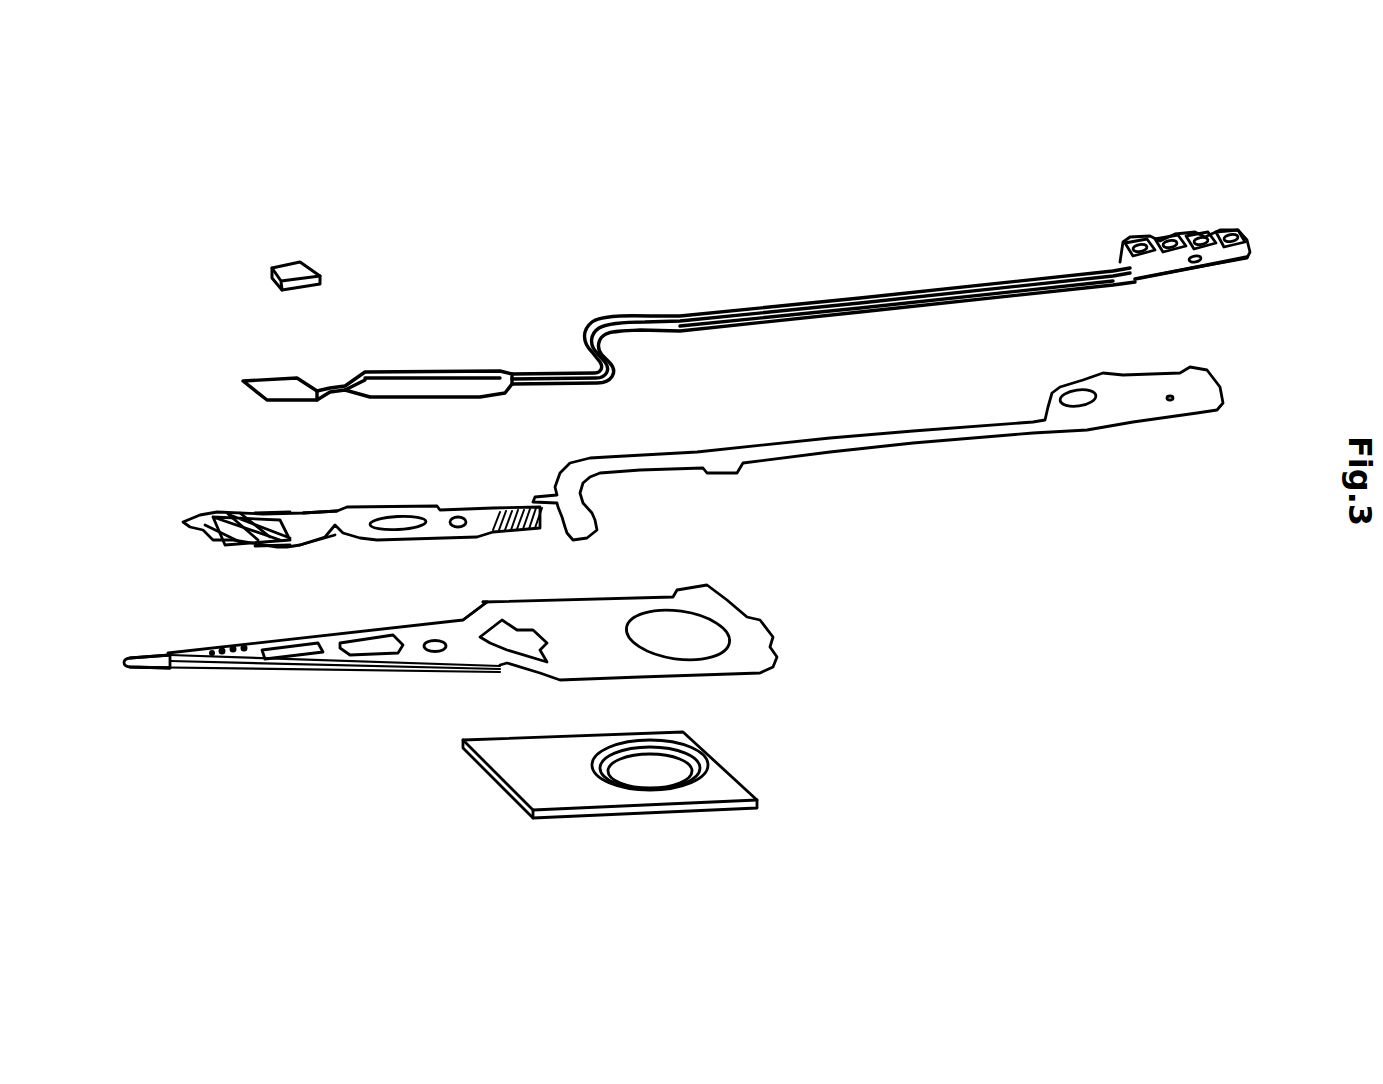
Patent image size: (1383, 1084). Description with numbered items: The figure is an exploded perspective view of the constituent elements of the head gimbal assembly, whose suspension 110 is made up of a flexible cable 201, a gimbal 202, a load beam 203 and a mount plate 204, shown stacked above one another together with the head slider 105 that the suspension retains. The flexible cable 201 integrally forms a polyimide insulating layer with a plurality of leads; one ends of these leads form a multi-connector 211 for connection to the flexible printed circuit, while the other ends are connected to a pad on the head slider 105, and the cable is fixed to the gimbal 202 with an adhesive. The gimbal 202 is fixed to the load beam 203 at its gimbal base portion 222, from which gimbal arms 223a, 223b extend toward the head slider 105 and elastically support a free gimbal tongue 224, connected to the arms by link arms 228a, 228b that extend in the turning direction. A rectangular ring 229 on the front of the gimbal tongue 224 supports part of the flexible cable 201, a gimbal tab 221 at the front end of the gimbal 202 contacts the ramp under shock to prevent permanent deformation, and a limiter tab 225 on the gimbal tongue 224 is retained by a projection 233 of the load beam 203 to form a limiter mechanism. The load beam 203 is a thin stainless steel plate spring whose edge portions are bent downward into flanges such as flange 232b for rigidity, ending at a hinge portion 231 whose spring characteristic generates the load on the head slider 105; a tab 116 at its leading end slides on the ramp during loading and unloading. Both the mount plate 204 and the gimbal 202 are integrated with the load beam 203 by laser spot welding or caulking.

The head slider 105 is at (296, 263).
The suspension 110 is at (145, 408).
The flexible cable 201 is at (920, 296).
The multi-connector 211 is at (1205, 218).
The gimbal 202 is at (603, 460).
The gimbal base portion 222 is at (428, 508).
The gimbal tab 221 is at (202, 535).
The gimbal tongue 224 is at (247, 512).
The limiter tab 225 is at (233, 513).
The rectangular ring 229 is at (212, 512).
The link arm 228a is at (262, 513).
The link arm 228b is at (268, 547).
The gimbal arm 223a is at (325, 510).
The gimbal arm 223b is at (328, 548).
The load beam 203 is at (612, 598).
The hinge portion 231 is at (480, 588).
The flange 232b is at (272, 674).
The projection 233 is at (218, 648).
The tab 116 is at (132, 670).
The mount plate 204 is at (738, 778).